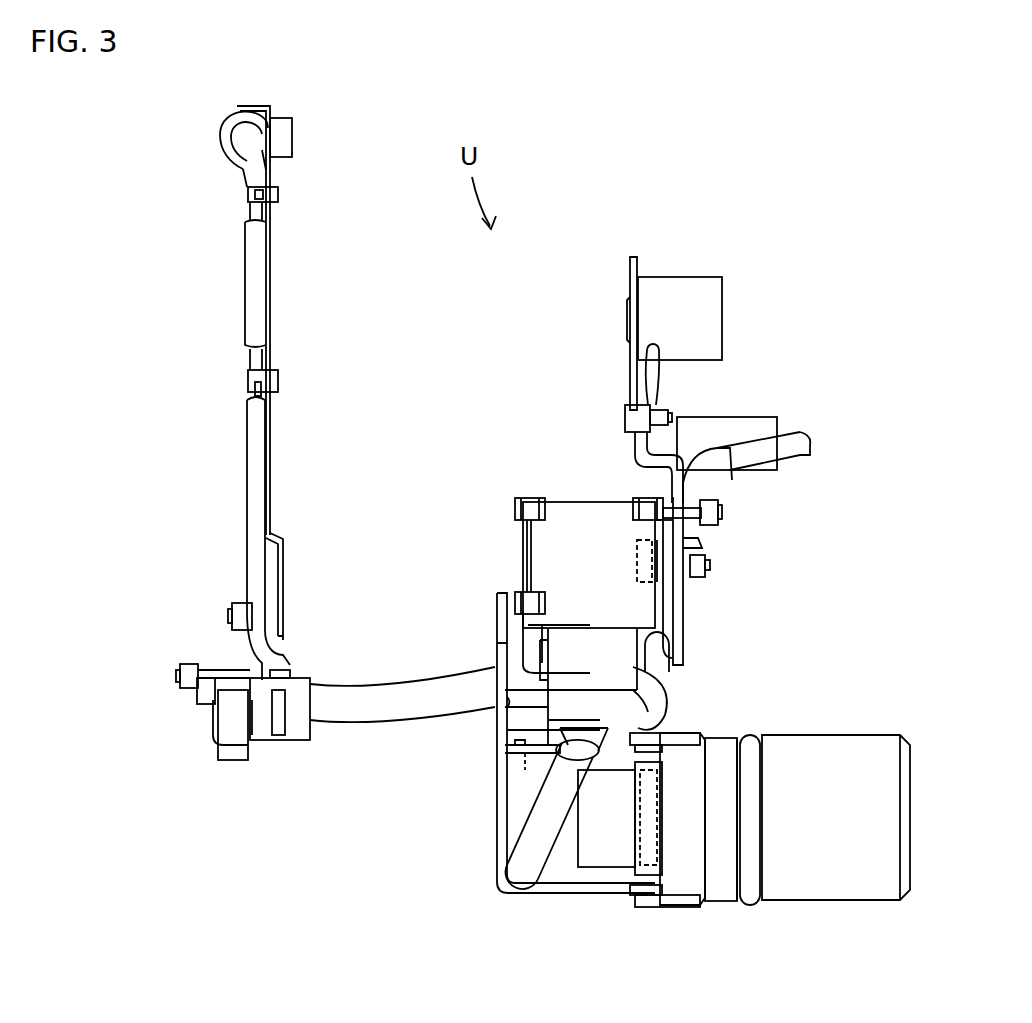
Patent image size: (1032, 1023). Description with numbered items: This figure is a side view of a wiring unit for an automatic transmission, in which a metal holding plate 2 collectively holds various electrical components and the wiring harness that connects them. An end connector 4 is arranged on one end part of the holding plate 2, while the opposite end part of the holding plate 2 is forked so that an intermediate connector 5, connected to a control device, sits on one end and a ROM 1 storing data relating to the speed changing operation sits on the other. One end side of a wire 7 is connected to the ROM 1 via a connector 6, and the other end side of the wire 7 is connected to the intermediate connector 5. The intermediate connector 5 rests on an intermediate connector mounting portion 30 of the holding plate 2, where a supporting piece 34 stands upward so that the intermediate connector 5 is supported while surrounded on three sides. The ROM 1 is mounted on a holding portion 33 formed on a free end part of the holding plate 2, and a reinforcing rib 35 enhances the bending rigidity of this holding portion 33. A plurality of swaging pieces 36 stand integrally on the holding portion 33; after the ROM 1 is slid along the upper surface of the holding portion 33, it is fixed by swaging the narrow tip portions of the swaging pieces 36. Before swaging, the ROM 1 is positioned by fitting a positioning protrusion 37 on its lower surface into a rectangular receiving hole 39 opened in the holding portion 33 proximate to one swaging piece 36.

The ROM 1 is at (572, 512).
The holding plate 2 is at (487, 810).
The end connector 4 is at (708, 300).
The intermediate connector 5 is at (832, 893).
The connector 6 is at (612, 657).
The wire 7 is at (525, 882).
The intermediate connector mounting portion 30 is at (495, 870).
The holding portion 33 is at (663, 607).
The supporting piece 34 is at (530, 782).
The reinforcing rib 35 is at (660, 645).
The swaging piece 36 is at (537, 510).
The positioning protrusion 37 is at (700, 545).
The receiving hole 39 is at (697, 568).